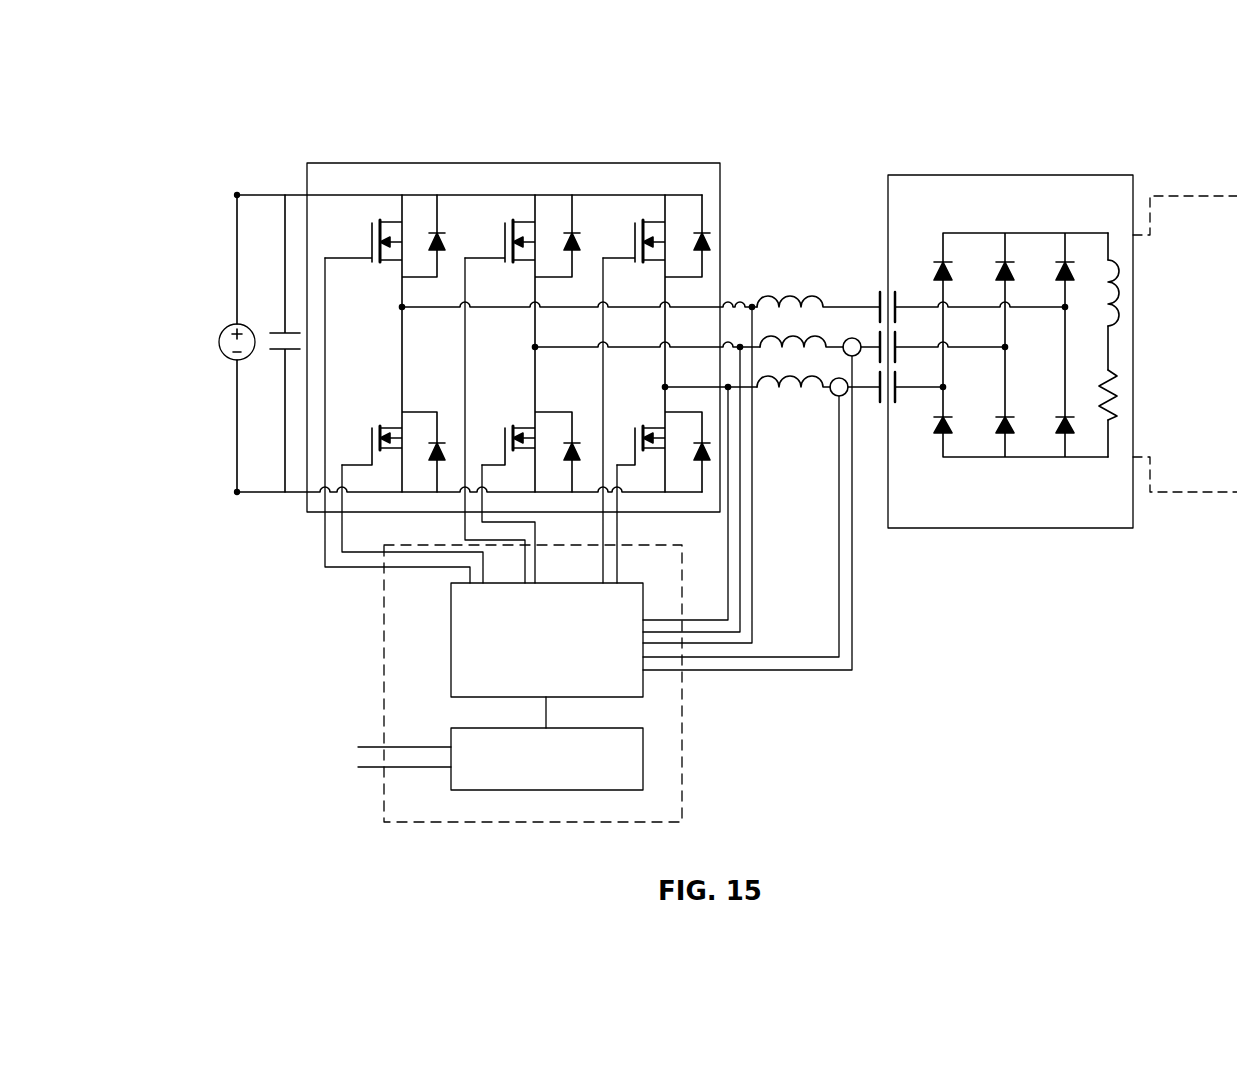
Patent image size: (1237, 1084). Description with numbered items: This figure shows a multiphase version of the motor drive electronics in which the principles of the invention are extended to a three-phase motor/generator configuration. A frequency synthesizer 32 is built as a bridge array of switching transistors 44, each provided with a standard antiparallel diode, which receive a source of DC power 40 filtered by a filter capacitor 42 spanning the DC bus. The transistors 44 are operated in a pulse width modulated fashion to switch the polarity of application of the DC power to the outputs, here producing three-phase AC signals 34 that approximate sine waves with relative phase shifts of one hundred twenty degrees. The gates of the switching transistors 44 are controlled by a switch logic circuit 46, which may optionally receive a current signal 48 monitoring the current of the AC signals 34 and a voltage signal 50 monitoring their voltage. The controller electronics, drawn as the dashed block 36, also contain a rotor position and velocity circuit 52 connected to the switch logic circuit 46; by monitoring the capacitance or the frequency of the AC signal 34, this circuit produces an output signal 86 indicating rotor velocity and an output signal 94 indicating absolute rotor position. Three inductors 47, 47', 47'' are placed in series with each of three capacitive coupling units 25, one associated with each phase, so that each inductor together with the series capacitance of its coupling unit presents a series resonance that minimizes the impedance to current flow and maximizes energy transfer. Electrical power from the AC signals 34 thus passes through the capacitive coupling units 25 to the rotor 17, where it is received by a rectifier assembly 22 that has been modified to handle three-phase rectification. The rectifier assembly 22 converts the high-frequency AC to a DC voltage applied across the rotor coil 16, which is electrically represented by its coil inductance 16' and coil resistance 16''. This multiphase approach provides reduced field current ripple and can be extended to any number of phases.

The rotor coil 16 is at (1168, 296).
The coil inductance 16' is at (1159, 293).
The coil resistance 16'' is at (1157, 390).
The rotor 17 is at (955, 175).
The rectifier assembly 22 is at (943, 225).
The capacitive coupling units 25 is at (877, 270).
The frequency synthesizer 32 is at (424, 163).
The AC signals 34 is at (706, 386).
The controller 36 is at (384, 645).
The source of DC power 40 is at (222, 332).
The filter capacitor 42 is at (280, 352).
The switching transistors 44 is at (431, 426).
The switch logic circuit 46 is at (547, 640).
The inductor 47 is at (818, 266).
The inductor 47' is at (819, 385).
The inductor 47'' is at (818, 420).
The current signal 48 is at (840, 632).
The voltage signal 50 is at (741, 486).
The rotor position and velocity circuit 52 is at (547, 743).
The output signal 86 is at (376, 767).
The output signal 94 is at (376, 747).